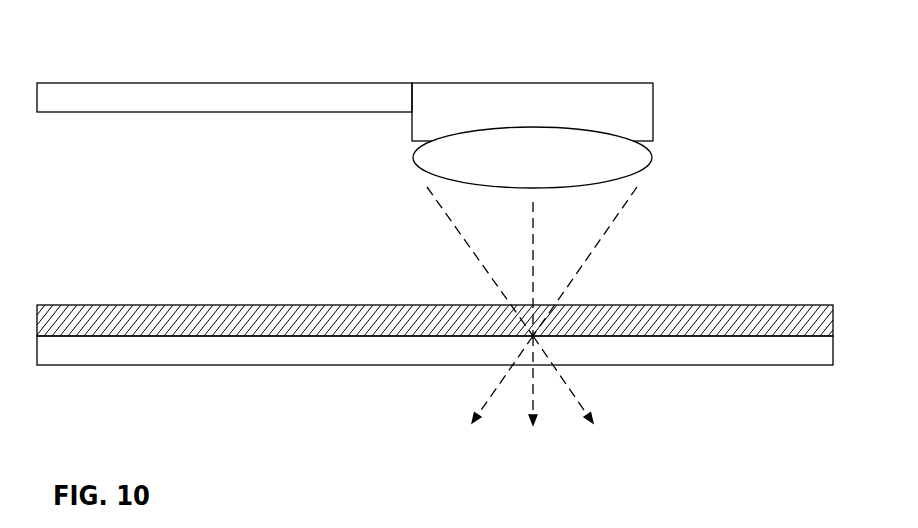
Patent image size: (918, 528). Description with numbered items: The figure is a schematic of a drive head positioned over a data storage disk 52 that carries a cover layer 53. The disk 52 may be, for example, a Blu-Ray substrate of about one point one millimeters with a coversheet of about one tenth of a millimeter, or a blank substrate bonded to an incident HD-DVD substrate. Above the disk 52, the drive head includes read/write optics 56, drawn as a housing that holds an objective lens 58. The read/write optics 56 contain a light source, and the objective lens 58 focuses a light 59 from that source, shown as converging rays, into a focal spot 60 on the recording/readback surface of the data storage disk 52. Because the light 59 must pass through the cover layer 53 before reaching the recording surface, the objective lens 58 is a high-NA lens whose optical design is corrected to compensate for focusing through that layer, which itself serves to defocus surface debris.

The data storage disk 52 is at (262, 348).
The cover layer 53 is at (203, 320).
The read/write optics 56 is at (622, 65).
The objective lens 58 is at (655, 158).
The light 59 is at (623, 247).
The focal spot 60 is at (548, 336).